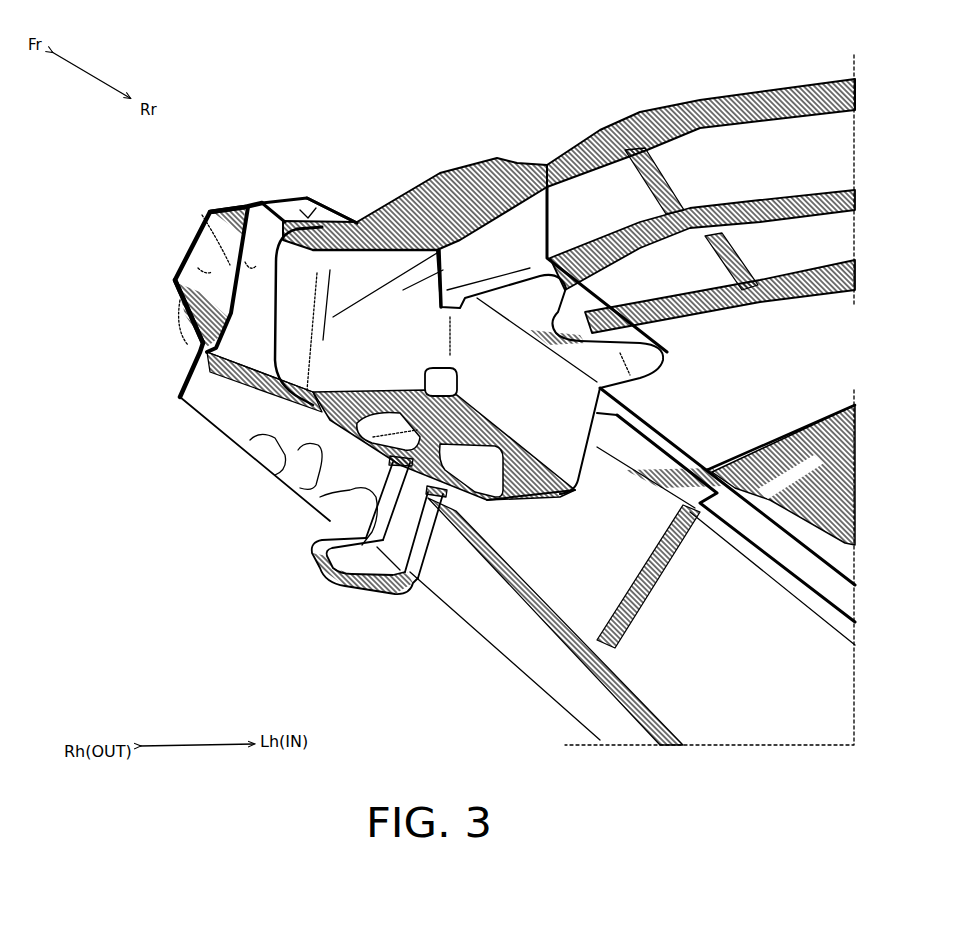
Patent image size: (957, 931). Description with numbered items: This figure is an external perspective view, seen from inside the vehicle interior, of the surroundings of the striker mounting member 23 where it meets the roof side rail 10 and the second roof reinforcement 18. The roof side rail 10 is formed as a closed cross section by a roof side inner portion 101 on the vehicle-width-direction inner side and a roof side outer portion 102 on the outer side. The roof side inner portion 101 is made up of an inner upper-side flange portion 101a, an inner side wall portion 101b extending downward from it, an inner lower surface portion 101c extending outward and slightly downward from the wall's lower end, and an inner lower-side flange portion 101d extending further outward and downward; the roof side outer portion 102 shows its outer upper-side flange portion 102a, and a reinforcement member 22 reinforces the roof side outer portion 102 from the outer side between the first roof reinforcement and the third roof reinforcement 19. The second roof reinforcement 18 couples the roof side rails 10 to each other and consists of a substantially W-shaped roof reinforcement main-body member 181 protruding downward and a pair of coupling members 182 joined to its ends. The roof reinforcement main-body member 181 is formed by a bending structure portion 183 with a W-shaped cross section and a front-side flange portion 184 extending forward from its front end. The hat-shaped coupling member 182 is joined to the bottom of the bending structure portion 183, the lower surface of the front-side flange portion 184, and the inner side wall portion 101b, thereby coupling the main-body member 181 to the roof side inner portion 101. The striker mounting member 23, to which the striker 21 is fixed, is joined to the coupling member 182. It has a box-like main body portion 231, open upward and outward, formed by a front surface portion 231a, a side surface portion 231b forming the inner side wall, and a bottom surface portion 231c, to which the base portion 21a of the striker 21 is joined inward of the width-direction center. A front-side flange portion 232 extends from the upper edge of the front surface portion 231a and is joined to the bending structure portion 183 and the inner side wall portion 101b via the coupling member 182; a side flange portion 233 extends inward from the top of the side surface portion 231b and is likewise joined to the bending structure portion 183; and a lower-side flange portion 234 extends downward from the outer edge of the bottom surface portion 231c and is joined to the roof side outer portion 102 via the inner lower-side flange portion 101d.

The roof side rail 10 is at (264, 334).
The second roof reinforcement 18 is at (604, 400).
The third roof reinforcement 19 is at (813, 432).
The striker 21 is at (400, 573).
The base portion 21a is at (488, 633).
The reinforcement member 22 is at (188, 240).
The striker mounting member 23 is at (466, 507).
The roof side inner portion 101 is at (284, 334).
The inner upper-side flange portion 101a is at (290, 198).
The inner side wall portion 101b is at (207, 206).
The inner lower surface portion 101c is at (320, 430).
The inner lower-side flange portion 101d is at (217, 390).
The roof side outer portion 102 is at (175, 283).
The outer upper-side flange portion 102a is at (338, 200).
The roof reinforcement main-body member 181 is at (592, 135).
The coupling member 182 is at (392, 205).
The bending structure portion 183 is at (824, 178).
The front-side flange portion 184 is at (672, 122).
The main body portion 231 is at (600, 493).
The front surface portion 231a is at (446, 250).
The side surface portion 231b is at (600, 408).
The bottom surface portion 231c is at (547, 500).
The front-side flange portion 232 is at (205, 358).
The side flange portion 233 is at (640, 372).
The lower-side flange portion 234 is at (360, 440).